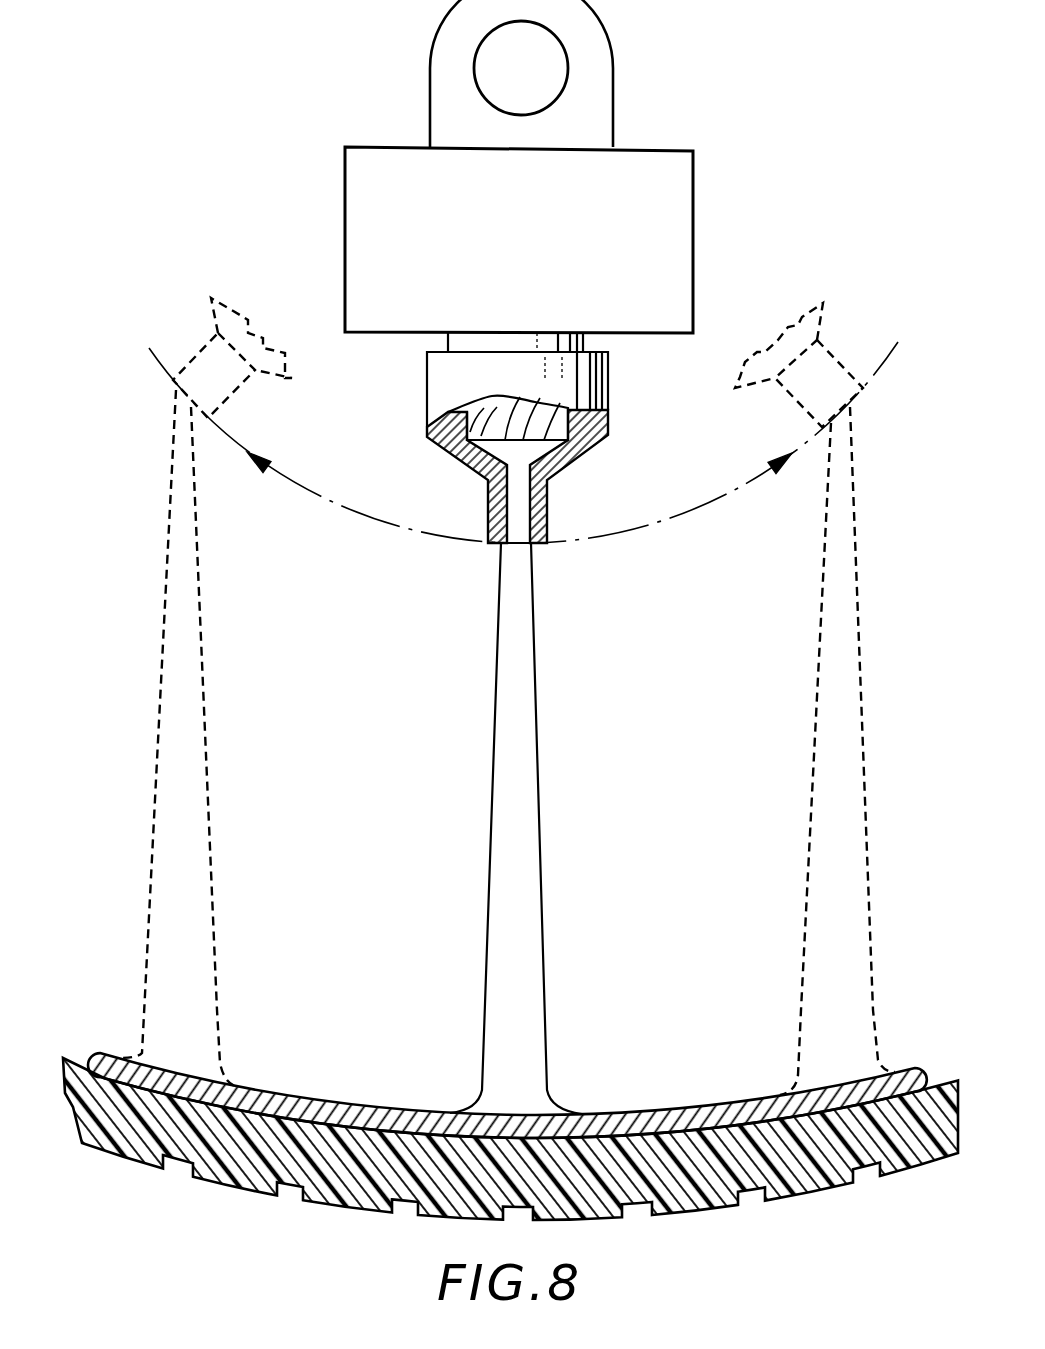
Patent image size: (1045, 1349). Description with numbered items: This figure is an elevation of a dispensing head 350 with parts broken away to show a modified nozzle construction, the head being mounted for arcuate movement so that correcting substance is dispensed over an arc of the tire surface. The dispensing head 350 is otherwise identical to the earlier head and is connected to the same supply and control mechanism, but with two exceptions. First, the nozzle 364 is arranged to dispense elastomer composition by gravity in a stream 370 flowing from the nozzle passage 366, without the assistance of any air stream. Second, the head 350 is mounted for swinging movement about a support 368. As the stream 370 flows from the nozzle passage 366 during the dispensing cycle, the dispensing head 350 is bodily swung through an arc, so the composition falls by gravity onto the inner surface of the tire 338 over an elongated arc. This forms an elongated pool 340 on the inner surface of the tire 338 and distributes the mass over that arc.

The support 368 is at (548, 79).
The dispensing head 350 is at (652, 221).
The nozzle 364 is at (547, 504).
The nozzle passage 366 is at (516, 548).
The stream 370 is at (547, 848).
The elongated pool 340 is at (352, 1106).
The tire 338 is at (706, 1210).